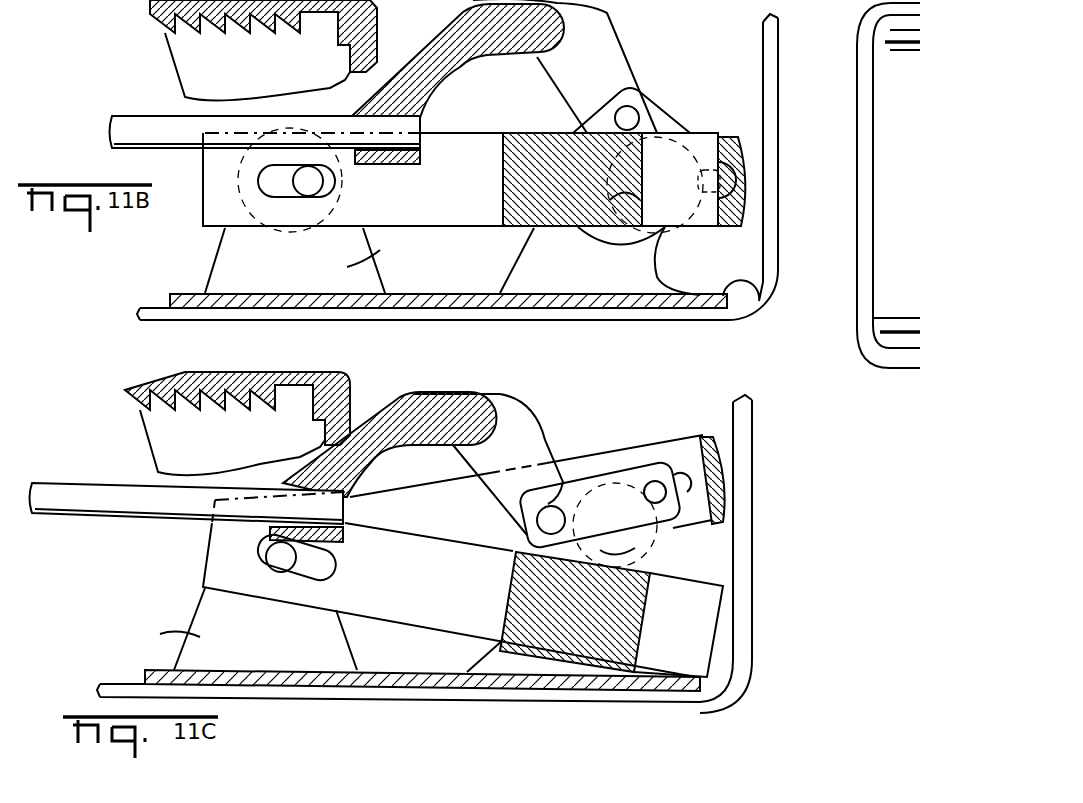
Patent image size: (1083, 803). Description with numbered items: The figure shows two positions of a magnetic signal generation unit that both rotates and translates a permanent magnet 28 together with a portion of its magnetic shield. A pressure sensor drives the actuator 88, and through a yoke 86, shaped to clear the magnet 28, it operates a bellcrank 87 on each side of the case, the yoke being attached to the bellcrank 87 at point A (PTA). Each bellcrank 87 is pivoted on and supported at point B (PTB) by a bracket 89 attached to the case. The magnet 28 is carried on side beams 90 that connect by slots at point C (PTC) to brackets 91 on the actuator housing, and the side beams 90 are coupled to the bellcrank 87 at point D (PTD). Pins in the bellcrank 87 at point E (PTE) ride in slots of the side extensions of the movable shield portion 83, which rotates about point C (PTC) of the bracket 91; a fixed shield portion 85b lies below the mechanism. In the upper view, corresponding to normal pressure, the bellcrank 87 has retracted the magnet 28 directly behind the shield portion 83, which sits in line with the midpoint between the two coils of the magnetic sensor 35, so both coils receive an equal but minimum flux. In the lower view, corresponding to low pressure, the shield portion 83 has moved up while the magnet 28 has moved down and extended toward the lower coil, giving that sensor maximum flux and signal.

In FIG. 11B, the magnet 28 is at (727, 140).
In FIG. 11C, the magnet 28 is at (717, 628).
In FIG. 11B, the magnetic sensor 35 is at (867, 358).
In FIG. 11B, the movable portion of the magnetic shield 83 is at (745, 173).
In FIG. 11C, the movable portion of the magnetic shield 83 is at (718, 464).
In FIG. 11B, the fixed lower portion of the magnetic shield 85b is at (763, 318).
In FIG. 11C, the fixed lower portion of the magnetic shield 85b is at (260, 670).
In FIG. 11B, the yoke 86 is at (628, 48).
In FIG. 11C, the yoke 86 is at (515, 396).
In FIG. 11B, the bellcrank 87 is at (675, 118).
In FIG. 11C, the bellcrank 87 is at (600, 470).
In FIG. 11B, the actuator 88 is at (185, 140).
In FIG. 11B, the bracket 89 is at (505, 278).
In FIG. 11C, the bracket 89 is at (533, 663).
In FIG. 11B, the side beam 90 is at (347, 244).
In FIG. 11C, the side beam 90 is at (405, 615).
In FIG. 11B, the bracket 91 is at (380, 256).
In FIG. 11C, the bracket 91 is at (165, 637).
In FIG. 11B, the point A PTA is at (634, 108).
In FIG. 11C, the point A PTA is at (553, 506).
In FIG. 11B, the point B PTB is at (620, 195).
In FIG. 11C, the point B PTB is at (613, 552).
In FIG. 11B, the point C PTC is at (302, 184).
In FIG. 11C, the point C PTC is at (270, 558).
In FIG. 11B, the point D PTD is at (548, 190).
In FIG. 11C, the point D PTD is at (557, 617).
In FIG. 11B, the point E PTE is at (705, 195).
In FIG. 11C, the point E PTE is at (657, 482).